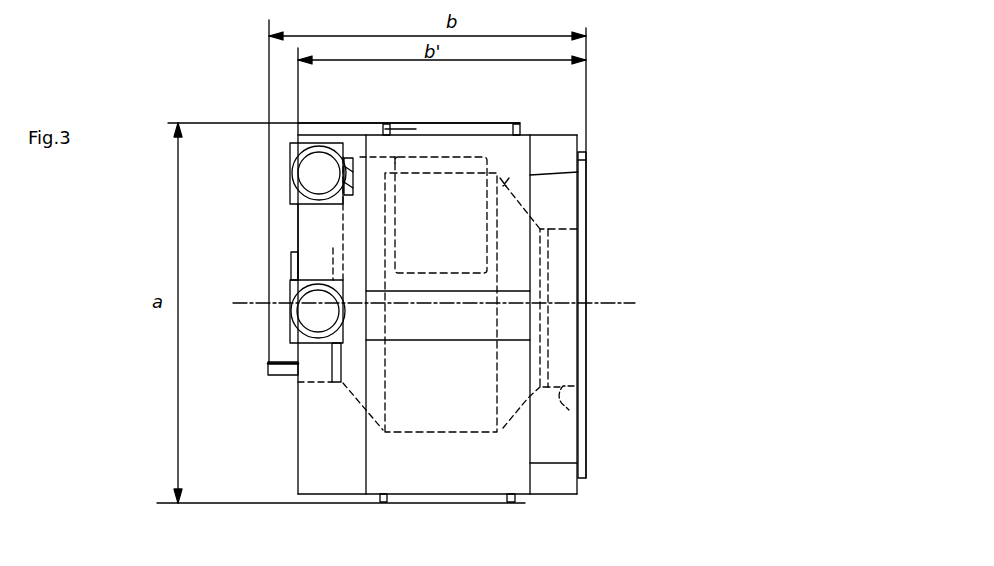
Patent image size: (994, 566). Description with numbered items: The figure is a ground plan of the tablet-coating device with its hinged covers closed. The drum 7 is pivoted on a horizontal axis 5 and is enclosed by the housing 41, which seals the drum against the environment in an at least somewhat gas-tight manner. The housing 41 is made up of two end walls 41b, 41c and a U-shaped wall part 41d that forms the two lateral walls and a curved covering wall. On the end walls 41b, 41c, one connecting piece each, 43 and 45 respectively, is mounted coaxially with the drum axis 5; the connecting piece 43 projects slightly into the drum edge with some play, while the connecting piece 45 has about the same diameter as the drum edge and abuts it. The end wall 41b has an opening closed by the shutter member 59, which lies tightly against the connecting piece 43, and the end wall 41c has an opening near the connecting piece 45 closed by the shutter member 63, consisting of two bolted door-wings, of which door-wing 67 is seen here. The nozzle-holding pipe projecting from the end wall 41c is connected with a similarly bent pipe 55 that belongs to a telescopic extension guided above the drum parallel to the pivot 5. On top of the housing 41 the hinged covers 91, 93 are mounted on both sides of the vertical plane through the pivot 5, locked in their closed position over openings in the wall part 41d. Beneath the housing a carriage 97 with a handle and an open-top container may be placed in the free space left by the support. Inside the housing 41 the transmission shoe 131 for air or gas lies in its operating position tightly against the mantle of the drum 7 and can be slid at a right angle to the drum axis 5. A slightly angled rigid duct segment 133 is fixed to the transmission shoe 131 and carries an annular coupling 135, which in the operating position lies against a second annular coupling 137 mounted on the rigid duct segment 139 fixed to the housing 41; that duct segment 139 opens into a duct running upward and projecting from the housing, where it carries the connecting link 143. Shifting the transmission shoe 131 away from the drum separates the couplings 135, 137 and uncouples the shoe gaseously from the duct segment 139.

The housing 41 is at (563, 135).
The end wall 41b is at (583, 150).
The end wall 41c is at (297, 225).
The U-shaped wall part 41d is at (320, 136).
The connecting link 143 is at (290, 152).
The annular coupling 137 is at (336, 143).
The annular coupling 135 is at (355, 152).
The rigid duct segment 133 is at (374, 155).
The carriage 97 is at (416, 129).
The transmission shoe 131 is at (475, 153).
The drum 7 is at (505, 180).
The hinged cover 91 is at (578, 172).
The shutter member 59 is at (584, 233).
The connecting piece 43 is at (569, 412).
The hinged cover 93 is at (577, 463).
The rigid duct segment 139 is at (385, 173).
The shutter member 63 is at (291, 260).
The horizontal axis 5 is at (252, 303).
The bent pipe 55 is at (268, 378).
The door-wing 67 is at (296, 385).
The connecting piece 45 is at (332, 383).